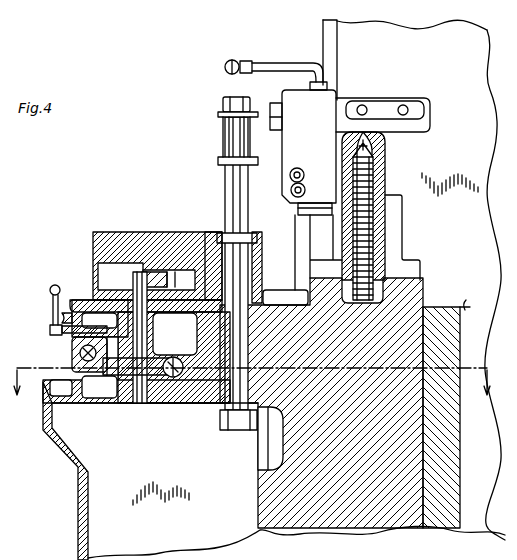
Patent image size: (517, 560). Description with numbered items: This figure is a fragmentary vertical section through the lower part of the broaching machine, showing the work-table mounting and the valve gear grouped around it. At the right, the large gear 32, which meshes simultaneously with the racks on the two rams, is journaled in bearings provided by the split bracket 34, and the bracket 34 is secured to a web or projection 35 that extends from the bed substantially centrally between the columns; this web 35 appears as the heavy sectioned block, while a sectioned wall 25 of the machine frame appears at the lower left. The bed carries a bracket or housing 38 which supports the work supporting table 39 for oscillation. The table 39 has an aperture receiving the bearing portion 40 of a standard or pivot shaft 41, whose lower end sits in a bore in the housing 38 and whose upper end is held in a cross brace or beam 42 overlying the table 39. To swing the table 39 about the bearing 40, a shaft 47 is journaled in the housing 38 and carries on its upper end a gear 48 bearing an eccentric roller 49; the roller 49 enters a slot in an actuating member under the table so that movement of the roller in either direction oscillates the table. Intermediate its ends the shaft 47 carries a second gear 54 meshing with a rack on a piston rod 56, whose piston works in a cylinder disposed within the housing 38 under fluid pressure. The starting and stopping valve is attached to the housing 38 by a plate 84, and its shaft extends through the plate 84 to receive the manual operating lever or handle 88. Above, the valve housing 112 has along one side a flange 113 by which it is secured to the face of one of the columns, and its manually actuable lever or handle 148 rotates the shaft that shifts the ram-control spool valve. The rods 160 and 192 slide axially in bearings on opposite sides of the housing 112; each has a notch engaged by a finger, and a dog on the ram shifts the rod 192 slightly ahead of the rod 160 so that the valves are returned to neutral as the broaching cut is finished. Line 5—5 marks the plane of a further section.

The section line 5- 5 is at (253, 388).
The casing wall 25 is at (78, 508).
The large gear 32 is at (360, 216).
The split bracket 34 is at (386, 156).
The web or projection 35 is at (403, 300).
The bracket or housing 38 is at (76, 311).
The work supporting table 39 is at (106, 232).
The bearing portion 40 is at (212, 233).
The standard or pivot shaft 41 is at (229, 186).
The cross brace or beam 42 is at (222, 113).
The shaft 47 is at (140, 405).
The gear 48 is at (80, 300).
The roller 49 is at (137, 270).
The second gear 54 is at (158, 376).
The piston rod 56 is at (181, 378).
The plate 84 is at (70, 355).
The manual operating lever or handle 88 is at (52, 311).
The housing 112 is at (318, 112).
The flange 113 is at (427, 104).
The manually actuable lever or handle 148 is at (297, 52).
The rod 160 is at (305, 188).
The rod 192 is at (294, 170).